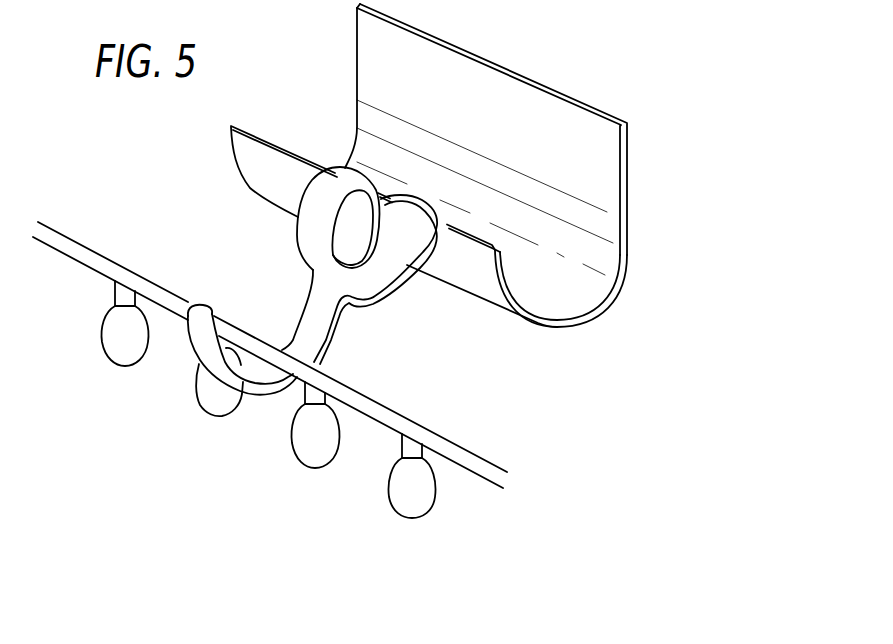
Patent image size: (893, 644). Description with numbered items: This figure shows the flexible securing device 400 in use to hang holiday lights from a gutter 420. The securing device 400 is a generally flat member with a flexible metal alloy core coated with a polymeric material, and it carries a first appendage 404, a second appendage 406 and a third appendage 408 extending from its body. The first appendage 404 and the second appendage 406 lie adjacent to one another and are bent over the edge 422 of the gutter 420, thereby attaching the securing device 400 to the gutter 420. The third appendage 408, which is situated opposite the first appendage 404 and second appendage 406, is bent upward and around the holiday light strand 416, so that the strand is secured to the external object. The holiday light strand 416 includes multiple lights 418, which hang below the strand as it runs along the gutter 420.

The securing device 400 is at (325, 220).
The first appendage 404 is at (347, 170).
The second appendage 406 is at (428, 203).
The third appendage 408 is at (201, 338).
The holiday light strand 416 is at (377, 411).
The lights 418 is at (303, 432).
The gutter 420 is at (392, 204).
The edge 422 is at (232, 127).